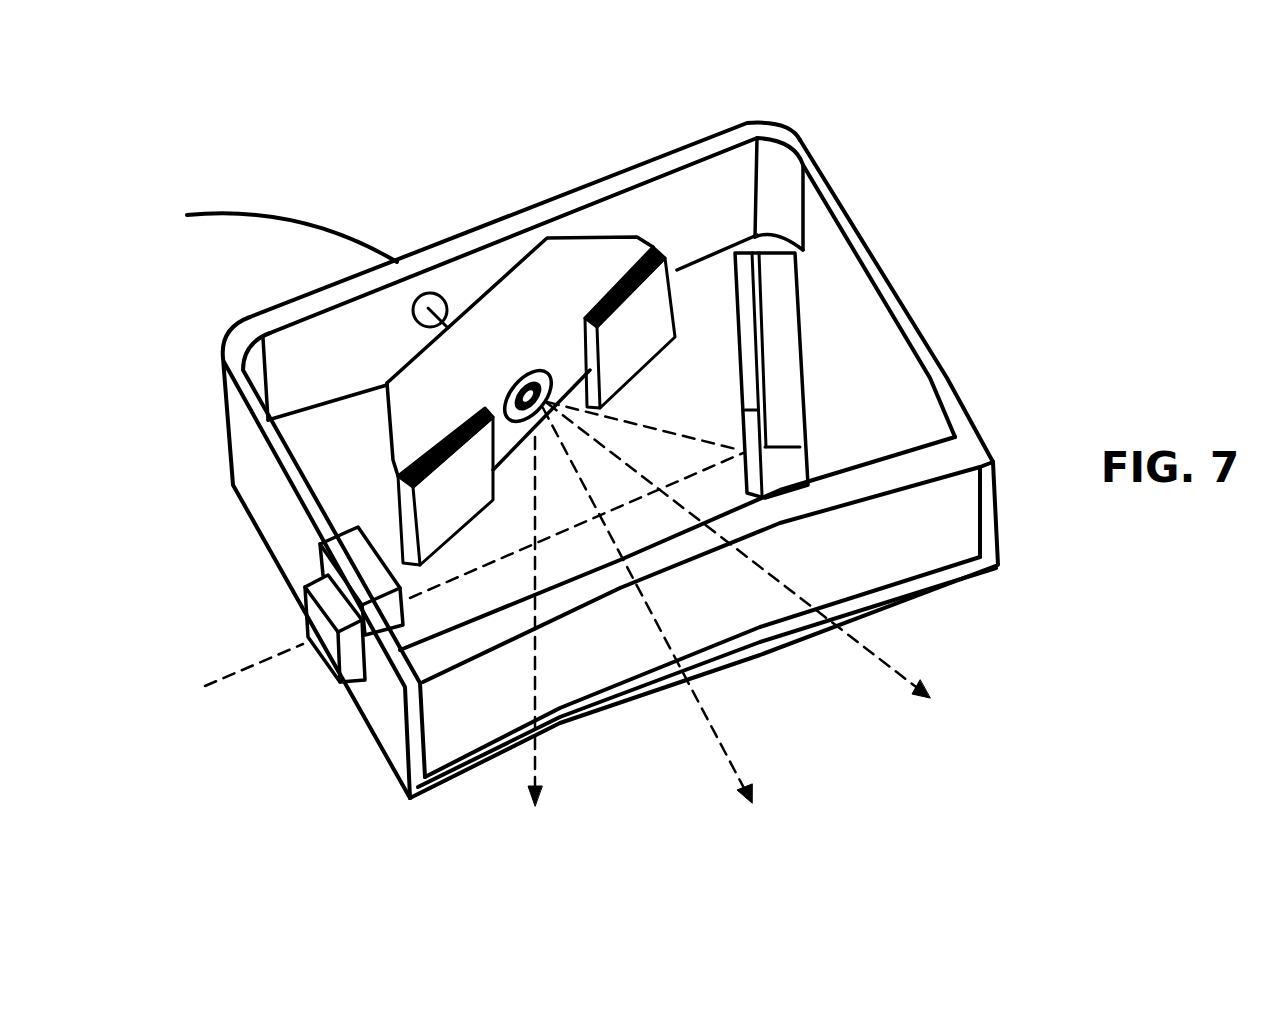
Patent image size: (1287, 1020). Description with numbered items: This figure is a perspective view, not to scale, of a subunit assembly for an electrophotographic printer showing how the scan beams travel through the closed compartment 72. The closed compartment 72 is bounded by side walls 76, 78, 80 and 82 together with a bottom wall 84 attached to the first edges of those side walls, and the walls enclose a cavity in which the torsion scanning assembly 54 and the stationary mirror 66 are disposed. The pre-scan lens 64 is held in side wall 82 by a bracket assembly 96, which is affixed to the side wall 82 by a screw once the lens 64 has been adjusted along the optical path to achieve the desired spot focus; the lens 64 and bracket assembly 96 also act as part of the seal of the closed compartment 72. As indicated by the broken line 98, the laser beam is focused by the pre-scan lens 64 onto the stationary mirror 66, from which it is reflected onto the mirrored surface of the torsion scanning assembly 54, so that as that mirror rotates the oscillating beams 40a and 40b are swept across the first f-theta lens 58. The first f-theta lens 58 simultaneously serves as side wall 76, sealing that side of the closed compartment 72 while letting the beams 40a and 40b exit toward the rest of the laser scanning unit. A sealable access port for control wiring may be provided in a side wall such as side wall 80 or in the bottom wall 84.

The closed compartment 72 is at (606, 428).
The side wall 80 is at (695, 190).
The side wall 78 is at (833, 253).
The side wall 82 is at (243, 445).
The side wall 76 is at (892, 470).
The first f-theta lens 58 is at (867, 548).
The bottom wall 84 is at (644, 712).
The torsion scanning assembly 54 is at (545, 270).
The stationary mirror 66 is at (743, 300).
The bracket assembly 96 is at (353, 563).
The pre-scan lens 64 is at (303, 622).
The broken line 98 is at (242, 672).
The oscillating beam 40a is at (759, 568).
The oscillating beam 40b is at (535, 653).